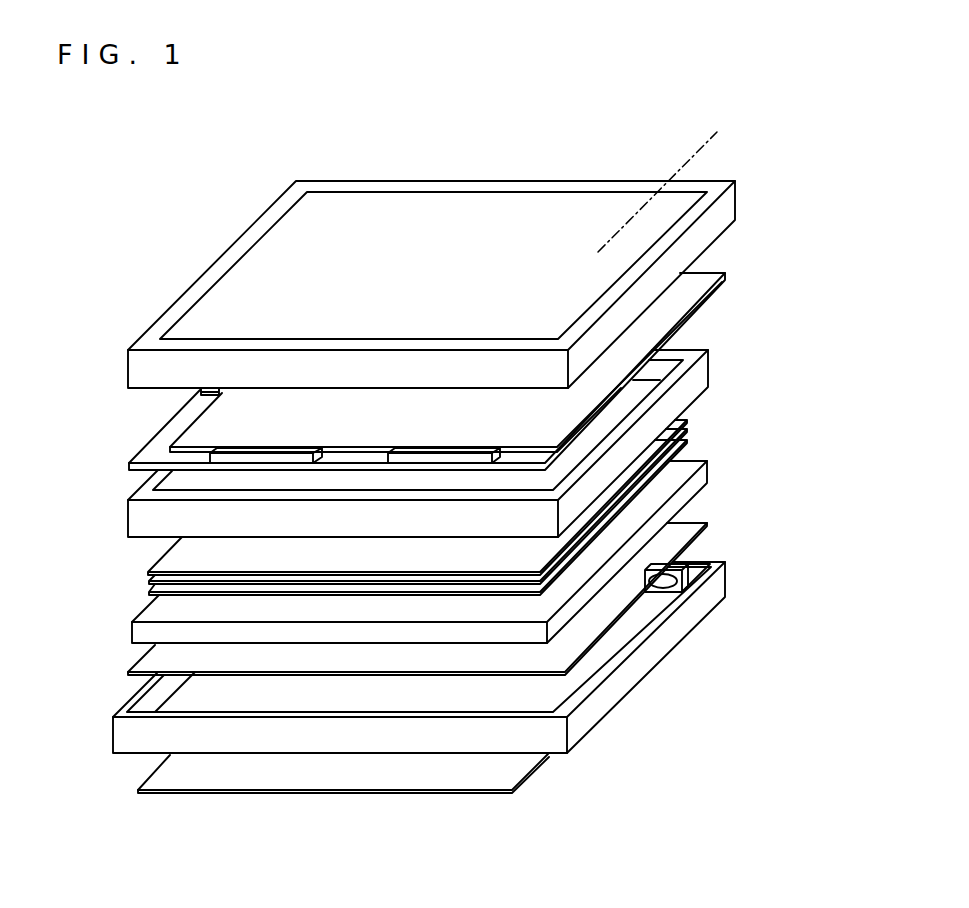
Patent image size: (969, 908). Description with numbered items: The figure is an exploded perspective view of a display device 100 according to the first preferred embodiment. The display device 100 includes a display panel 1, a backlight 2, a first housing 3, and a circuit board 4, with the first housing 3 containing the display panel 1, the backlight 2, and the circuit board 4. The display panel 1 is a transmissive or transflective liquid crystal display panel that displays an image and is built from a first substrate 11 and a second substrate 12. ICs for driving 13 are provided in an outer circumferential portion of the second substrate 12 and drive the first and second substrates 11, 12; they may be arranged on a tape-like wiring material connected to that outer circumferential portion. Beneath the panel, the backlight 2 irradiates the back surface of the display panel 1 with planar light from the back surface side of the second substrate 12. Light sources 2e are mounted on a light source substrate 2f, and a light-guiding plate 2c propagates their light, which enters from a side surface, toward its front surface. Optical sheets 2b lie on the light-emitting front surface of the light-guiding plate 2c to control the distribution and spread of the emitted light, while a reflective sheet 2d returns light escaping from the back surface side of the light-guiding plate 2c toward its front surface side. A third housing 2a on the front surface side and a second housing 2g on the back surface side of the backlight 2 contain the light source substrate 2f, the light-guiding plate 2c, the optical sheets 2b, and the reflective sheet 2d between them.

The display device 100 is at (337, 143).
The display panel 1 is at (404, 367).
The first substrate 11 is at (213, 428).
The second substrate 12 is at (152, 455).
The ICs for driving 13 is at (238, 458).
The backlight 2 is at (427, 551).
The third housing 2a is at (703, 373).
The optical sheets 2b is at (700, 405).
The light-guiding plate 2c is at (690, 489).
The reflective sheet 2d is at (700, 540).
The light sources 2e is at (688, 572).
The light source substrate 2f is at (667, 582).
The second housing 2g is at (600, 710).
The first housing 3 is at (723, 207).
The circuit board 4 is at (503, 768).